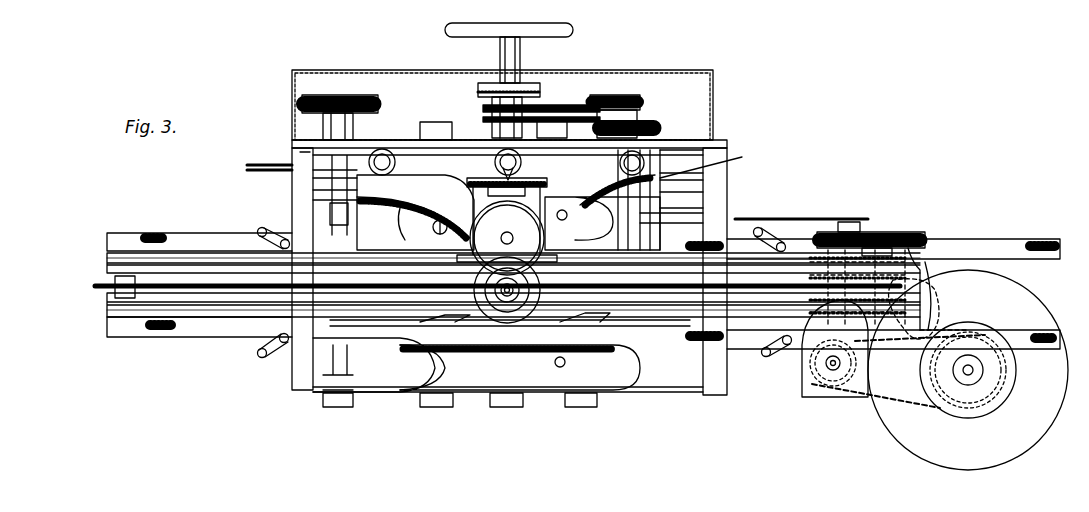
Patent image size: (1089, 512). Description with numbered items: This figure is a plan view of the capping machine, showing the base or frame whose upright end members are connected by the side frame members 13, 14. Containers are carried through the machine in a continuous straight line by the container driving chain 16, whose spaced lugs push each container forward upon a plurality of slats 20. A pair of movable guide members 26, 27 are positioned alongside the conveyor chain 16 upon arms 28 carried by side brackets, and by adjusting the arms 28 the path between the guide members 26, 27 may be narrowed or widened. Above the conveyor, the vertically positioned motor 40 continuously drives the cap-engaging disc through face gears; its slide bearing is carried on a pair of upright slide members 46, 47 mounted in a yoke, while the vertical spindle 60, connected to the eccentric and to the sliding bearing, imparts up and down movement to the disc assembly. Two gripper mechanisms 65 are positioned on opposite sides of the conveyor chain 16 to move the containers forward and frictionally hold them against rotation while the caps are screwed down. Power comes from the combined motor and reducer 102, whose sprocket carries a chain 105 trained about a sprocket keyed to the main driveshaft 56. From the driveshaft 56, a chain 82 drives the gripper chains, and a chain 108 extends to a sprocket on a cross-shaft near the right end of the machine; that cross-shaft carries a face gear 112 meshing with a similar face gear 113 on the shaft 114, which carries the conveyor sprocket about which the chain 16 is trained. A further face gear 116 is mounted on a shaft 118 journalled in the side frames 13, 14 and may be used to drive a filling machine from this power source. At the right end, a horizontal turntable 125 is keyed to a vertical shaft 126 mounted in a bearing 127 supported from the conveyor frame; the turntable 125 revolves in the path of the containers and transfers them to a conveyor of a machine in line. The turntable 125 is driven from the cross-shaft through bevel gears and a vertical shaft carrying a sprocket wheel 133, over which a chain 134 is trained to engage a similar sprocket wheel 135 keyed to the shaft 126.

The side frame member 13 is at (665, 395).
The side frame member 14 is at (692, 140).
The container driving chain 16 is at (95, 291).
The slats 20 is at (107, 268).
The movable guide member 26 is at (181, 232).
The movable guide member 27 is at (148, 338).
The arms 28 is at (252, 236).
The motor 40 is at (507, 250).
The upright slide member 46 is at (396, 162).
The upright slide member 47 is at (620, 164).
The main driveshaft 56 is at (500, 57).
The vertical spindle 60 is at (521, 163).
The gripper mechanisms 65 is at (400, 212).
The chain 82 is at (543, 120).
The combined motor and reducer 102 is at (717, 161).
The chain 105 is at (645, 110).
The chain 108 is at (808, 216).
The face gear 112 is at (848, 224).
The face gear 113 is at (912, 234).
The shaft 114 is at (922, 298).
The face gear 116 is at (335, 92).
The shaft 118 is at (330, 212).
The horizontal turntable 125 is at (1013, 452).
The vertical shaft 126 is at (985, 374).
The bearing 127 is at (935, 262).
The sprocket wheel 133 is at (832, 387).
The chain 134 is at (890, 398).
The sprocket wheel 135 is at (941, 405).